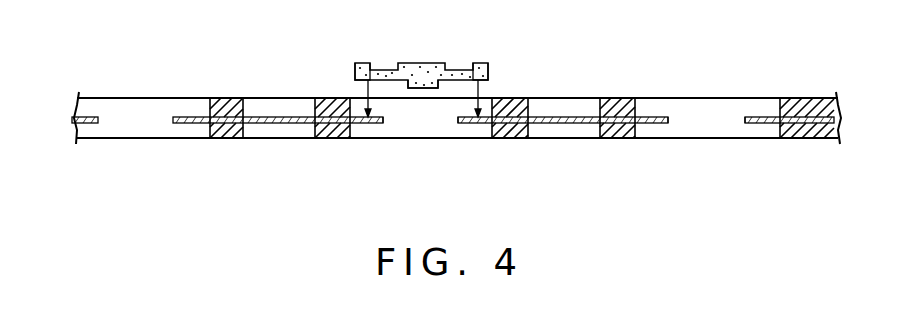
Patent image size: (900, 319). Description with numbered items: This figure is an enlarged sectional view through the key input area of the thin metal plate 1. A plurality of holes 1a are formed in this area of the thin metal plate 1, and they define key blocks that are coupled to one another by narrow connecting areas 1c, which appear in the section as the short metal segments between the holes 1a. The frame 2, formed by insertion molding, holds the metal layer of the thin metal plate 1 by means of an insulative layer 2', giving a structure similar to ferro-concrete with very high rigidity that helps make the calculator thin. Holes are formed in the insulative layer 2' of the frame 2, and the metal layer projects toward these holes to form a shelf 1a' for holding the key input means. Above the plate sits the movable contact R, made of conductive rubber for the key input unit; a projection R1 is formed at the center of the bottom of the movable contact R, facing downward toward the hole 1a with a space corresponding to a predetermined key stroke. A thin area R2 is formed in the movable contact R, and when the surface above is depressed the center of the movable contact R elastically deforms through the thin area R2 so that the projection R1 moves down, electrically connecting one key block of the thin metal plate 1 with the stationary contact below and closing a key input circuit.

The thin metal plate 1 is at (803, 120).
The holes 1a is at (453, 122).
The shelf 1a' is at (545, 154).
The narrow connecting areas 1c is at (276, 117).
The frame 2 is at (807, 86).
The insulative layer 2' is at (848, 94).
The movable contact R is at (414, 63).
The projection R1 is at (423, 90).
The thin area R2 is at (474, 42).